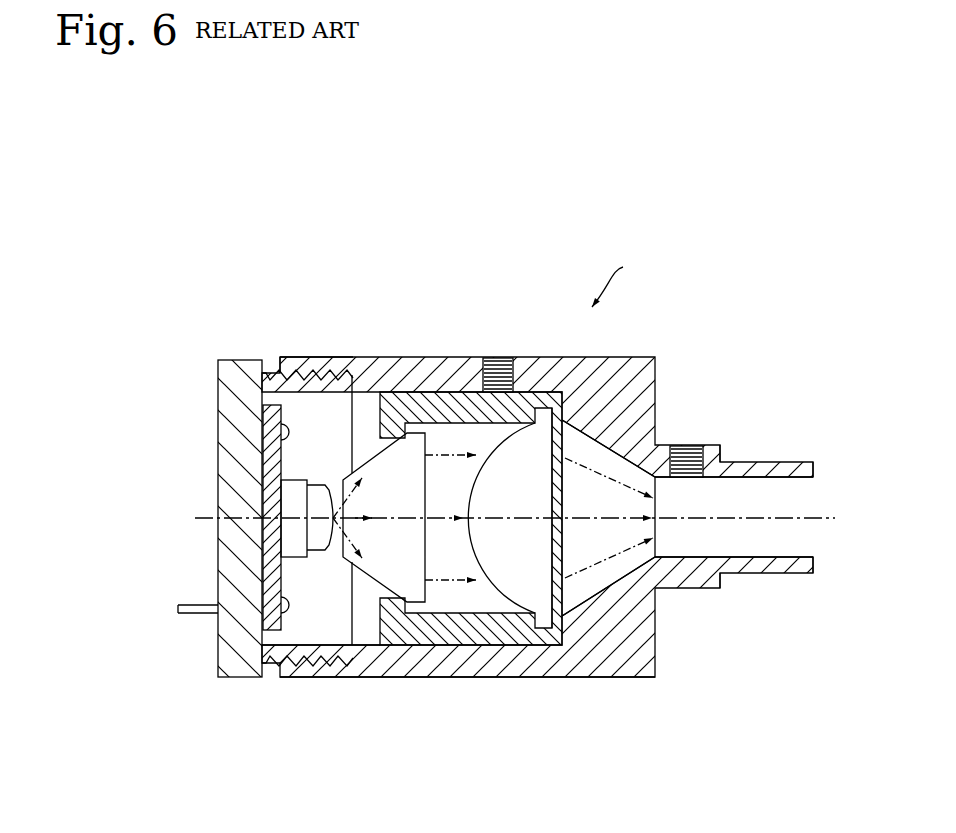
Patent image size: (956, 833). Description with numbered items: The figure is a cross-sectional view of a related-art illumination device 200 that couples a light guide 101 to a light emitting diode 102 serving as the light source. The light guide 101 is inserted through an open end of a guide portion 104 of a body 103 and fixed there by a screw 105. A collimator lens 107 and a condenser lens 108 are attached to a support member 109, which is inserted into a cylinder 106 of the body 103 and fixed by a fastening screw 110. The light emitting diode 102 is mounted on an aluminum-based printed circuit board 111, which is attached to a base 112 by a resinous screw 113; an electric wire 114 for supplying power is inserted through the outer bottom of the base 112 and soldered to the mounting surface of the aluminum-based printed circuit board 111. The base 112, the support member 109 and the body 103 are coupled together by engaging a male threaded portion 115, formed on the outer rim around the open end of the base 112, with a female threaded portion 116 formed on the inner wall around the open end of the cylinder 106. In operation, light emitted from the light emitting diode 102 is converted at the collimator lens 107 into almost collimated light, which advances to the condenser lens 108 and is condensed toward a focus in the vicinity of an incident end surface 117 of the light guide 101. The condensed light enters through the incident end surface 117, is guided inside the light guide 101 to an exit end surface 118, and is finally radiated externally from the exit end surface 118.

The illumination device 200 is at (637, 276).
The light guide 101 is at (734, 546).
The light emitting diode 102 is at (305, 612).
The body 103 is at (467, 729).
The guide portion 104 is at (537, 509).
The screw 105 is at (715, 434).
The cylinder 106 is at (377, 700).
The collimator lens 107 is at (392, 586).
The condenser lens 108 is at (539, 573).
The support member 109 is at (446, 565).
The fastening screw 110 is at (506, 341).
The aluminum-based printed circuit board 111 is at (223, 532).
The base 112 is at (229, 483).
The resinous screw 113 is at (218, 517).
The electric wire 114 is at (178, 642).
The male threaded portion 115 is at (315, 331).
The female threaded portion 116 is at (320, 478).
The incident end surface 117 is at (639, 552).
The exit end surface 118 is at (824, 552).